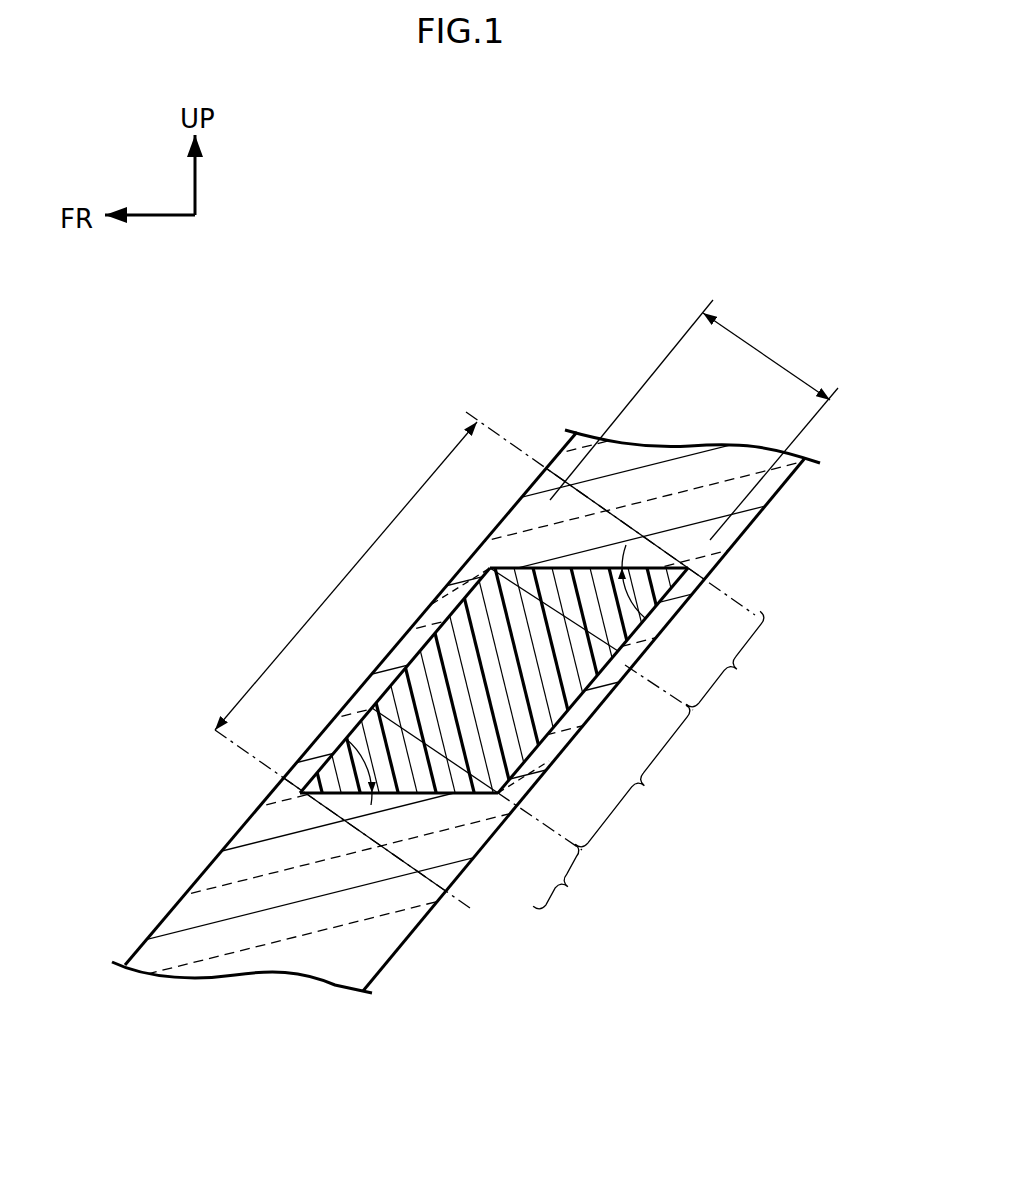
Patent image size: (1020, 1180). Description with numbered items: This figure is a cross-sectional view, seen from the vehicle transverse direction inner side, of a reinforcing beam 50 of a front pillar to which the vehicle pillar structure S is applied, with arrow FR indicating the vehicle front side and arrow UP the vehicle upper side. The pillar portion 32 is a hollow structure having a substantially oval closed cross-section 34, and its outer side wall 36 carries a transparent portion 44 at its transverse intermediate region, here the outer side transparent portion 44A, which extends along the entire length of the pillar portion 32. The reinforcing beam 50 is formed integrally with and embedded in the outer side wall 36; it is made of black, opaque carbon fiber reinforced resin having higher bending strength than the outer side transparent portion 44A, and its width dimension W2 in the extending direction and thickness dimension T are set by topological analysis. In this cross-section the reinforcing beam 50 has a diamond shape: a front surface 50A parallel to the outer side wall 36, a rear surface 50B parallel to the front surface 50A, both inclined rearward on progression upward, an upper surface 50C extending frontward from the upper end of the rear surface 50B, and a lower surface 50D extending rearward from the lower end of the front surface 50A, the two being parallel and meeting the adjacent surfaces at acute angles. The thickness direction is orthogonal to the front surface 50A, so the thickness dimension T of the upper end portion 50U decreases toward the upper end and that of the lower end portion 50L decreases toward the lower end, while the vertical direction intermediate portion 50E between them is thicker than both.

The closed cross-section 34 is at (534, 668).
The outer side wall 36 is at (653, 404).
The pillar portion 32 is at (563, 448).
The outer side transparent portion 44A is at (328, 698).
The transparent portion 44 is at (162, 921).
The reinforcing beam 50 is at (546, 754).
The front surface 50A is at (415, 655).
The rear surface 50B is at (573, 705).
The upper surface 50C is at (656, 567).
The lower surface 50D is at (455, 795).
The upper end portion 50U is at (741, 659).
The vertical direction intermediate portion 50E is at (638, 775).
The lower end portion 50L is at (571, 883).
The vehicle pillar structure S is at (398, 327).
The thickness dimension T is at (767, 357).
The width dimension W2 is at (352, 572).